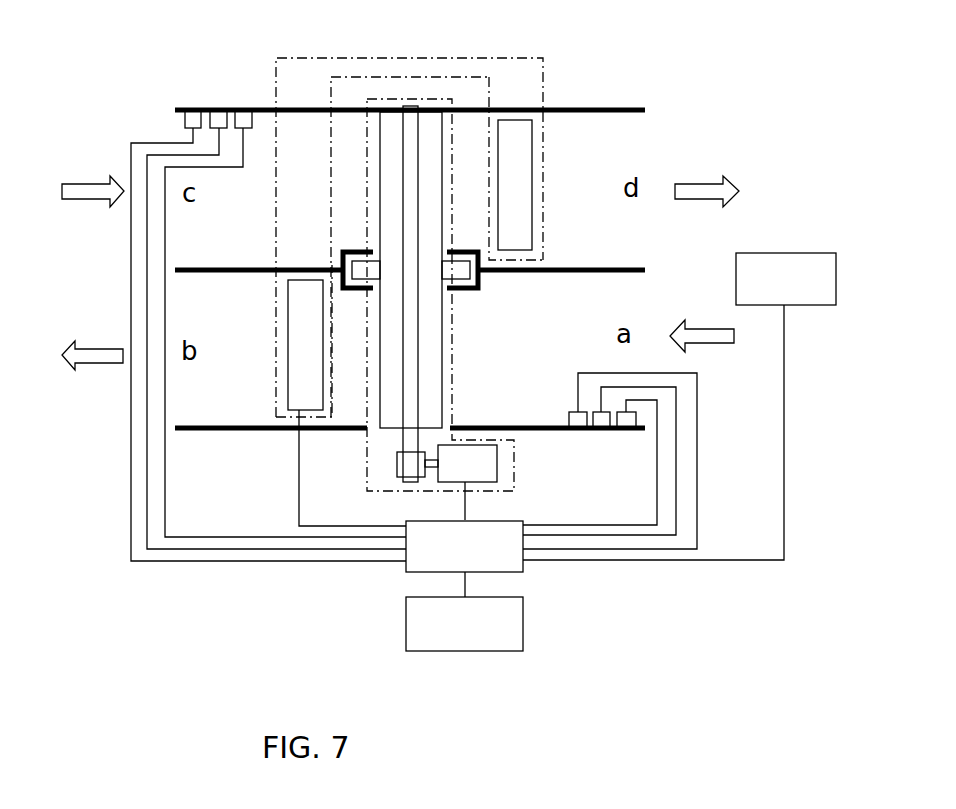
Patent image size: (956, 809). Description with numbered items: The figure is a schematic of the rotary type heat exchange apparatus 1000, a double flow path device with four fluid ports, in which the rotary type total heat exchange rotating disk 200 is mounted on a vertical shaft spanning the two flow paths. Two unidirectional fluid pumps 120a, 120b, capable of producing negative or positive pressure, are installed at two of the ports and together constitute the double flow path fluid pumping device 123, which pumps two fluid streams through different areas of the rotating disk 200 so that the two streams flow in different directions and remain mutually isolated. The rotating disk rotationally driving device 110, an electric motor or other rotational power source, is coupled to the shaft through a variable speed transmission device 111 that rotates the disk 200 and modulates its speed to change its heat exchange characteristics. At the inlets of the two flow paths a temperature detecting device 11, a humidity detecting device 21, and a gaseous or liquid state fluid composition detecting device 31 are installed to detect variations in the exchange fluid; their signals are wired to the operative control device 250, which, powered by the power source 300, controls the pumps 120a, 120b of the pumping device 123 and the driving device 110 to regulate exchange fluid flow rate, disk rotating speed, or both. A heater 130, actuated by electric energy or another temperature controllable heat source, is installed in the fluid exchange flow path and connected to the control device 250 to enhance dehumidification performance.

The temperature detecting device 11 is at (188, 125).
The humidity detecting device 21 is at (220, 118).
The gaseous or liquid state fluid composition detecting device 31 is at (238, 122).
The rotating disk rotationally driving device 110 is at (471, 462).
The variable speed transmission device 111 is at (397, 442).
The unidirectional fluid pump 120a is at (300, 358).
The unidirectional fluid pump 120b is at (519, 192).
The double flow path fluid pumping device 123 is at (316, 58).
The heater 130 is at (760, 252).
The rotary type total heat exchange rotating disk 200 is at (427, 120).
The operative control device 250 is at (508, 573).
The power source 300 is at (406, 624).
The rotary type heat exchange apparatus 1000 is at (450, 383).